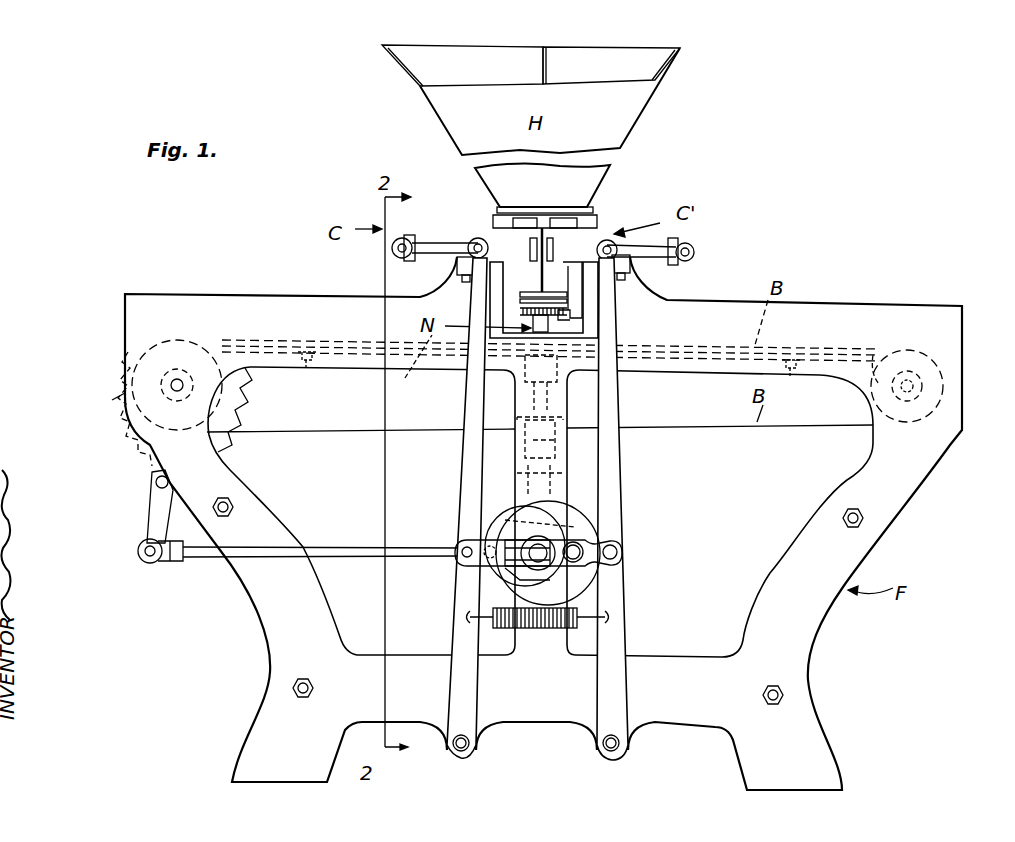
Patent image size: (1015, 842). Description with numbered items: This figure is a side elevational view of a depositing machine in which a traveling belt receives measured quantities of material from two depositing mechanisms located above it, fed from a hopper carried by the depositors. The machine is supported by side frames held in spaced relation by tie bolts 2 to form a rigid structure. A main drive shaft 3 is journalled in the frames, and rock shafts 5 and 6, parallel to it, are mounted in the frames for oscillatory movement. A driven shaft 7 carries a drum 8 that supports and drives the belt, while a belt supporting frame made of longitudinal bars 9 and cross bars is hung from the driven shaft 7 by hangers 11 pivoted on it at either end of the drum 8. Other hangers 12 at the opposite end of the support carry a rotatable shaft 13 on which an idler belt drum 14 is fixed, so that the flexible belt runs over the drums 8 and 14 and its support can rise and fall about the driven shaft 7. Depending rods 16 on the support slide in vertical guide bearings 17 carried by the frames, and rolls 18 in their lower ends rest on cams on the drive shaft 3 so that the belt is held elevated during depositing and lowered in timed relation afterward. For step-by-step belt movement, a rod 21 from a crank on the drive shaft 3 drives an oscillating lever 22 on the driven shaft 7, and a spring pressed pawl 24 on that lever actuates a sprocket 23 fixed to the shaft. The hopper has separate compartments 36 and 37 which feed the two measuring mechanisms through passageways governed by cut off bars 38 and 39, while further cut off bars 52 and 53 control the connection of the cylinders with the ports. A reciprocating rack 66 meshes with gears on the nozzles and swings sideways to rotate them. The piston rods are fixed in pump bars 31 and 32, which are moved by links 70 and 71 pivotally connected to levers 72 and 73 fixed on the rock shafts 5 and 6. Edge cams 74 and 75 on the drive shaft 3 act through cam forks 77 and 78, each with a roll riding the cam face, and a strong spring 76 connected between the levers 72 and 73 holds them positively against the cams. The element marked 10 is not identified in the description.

The tie bolts 2 is at (863, 518).
The main drive shaft 3 is at (530, 557).
The rock shaft 5 is at (458, 748).
The rock shaft 6 is at (608, 750).
The driven shaft 7 is at (172, 385).
The drum 8 is at (118, 368).
The longitudinal bars 9 is at (412, 371).
The hanger 10 is at (308, 364).
The hangers 11 is at (238, 378).
The hangers 12 is at (862, 368).
The rotatable shaft 13 is at (918, 388).
The idler belt drum 14 is at (940, 372).
The depending rods 16 is at (547, 398).
The vertical guide bearings 17 is at (555, 445).
The rolls 18 is at (596, 510).
The rod 21 is at (206, 556).
The oscillating lever 22 is at (155, 520).
The sprocket 23 is at (113, 405).
The spring pressed pawl 24 is at (156, 476).
The pump bar 31 is at (412, 236).
The pump bar 32 is at (680, 248).
The hopper compartment 36 is at (462, 65).
The hopper compartment 37 is at (611, 65).
The cut off bar 38 is at (505, 210).
The cut off bar 39 is at (566, 226).
The cut off bar 52 is at (528, 243).
The cut off bar 53 is at (556, 243).
The reciprocating rack 66 is at (549, 328).
The link 70 is at (438, 270).
The link 71 is at (655, 262).
The lever 72 is at (471, 472).
The lever 73 is at (612, 484).
The edge cam 74 is at (520, 524).
The edge cam 75 is at (574, 587).
The spring 76 is at (545, 630).
The cam fork 77 is at (505, 567).
The cam fork 78 is at (578, 543).